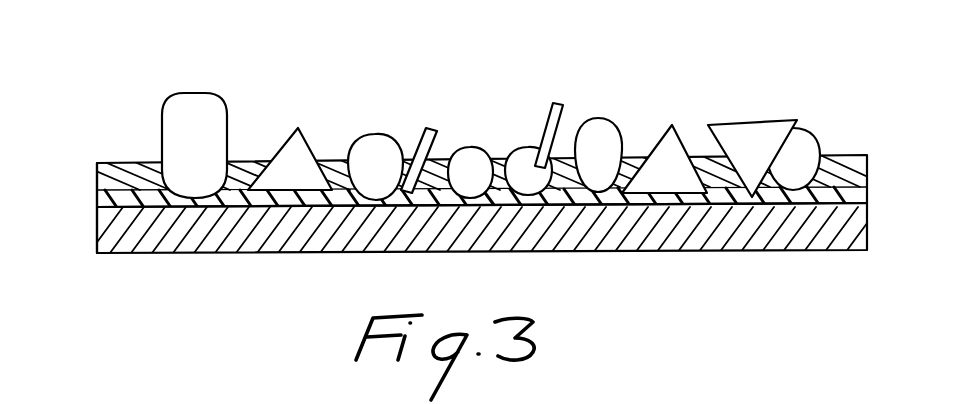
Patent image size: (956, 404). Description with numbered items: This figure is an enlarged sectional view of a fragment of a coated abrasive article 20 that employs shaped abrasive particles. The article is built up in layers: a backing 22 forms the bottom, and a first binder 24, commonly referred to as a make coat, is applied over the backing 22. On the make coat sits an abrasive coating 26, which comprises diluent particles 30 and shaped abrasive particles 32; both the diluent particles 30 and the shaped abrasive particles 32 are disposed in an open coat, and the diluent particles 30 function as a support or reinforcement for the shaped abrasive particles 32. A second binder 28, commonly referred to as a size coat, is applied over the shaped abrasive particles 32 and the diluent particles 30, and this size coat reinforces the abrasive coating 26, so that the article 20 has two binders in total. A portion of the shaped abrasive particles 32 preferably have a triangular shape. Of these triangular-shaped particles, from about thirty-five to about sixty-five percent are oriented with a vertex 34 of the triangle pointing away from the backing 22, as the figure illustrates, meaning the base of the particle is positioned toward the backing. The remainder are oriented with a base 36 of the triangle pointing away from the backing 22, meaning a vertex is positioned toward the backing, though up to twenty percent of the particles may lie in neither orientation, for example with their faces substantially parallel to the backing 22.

The coated abrasive article 20 is at (475, 177).
The backing 22 is at (146, 245).
The first binder 24 is at (97, 200).
The abrasive coating 26 is at (480, 117).
The second binder 28 is at (123, 168).
The diluent particles 30 is at (373, 143).
The shaped abrasive particles 32 is at (565, 123).
The vertex 34 is at (296, 126).
The base 36 is at (752, 120).